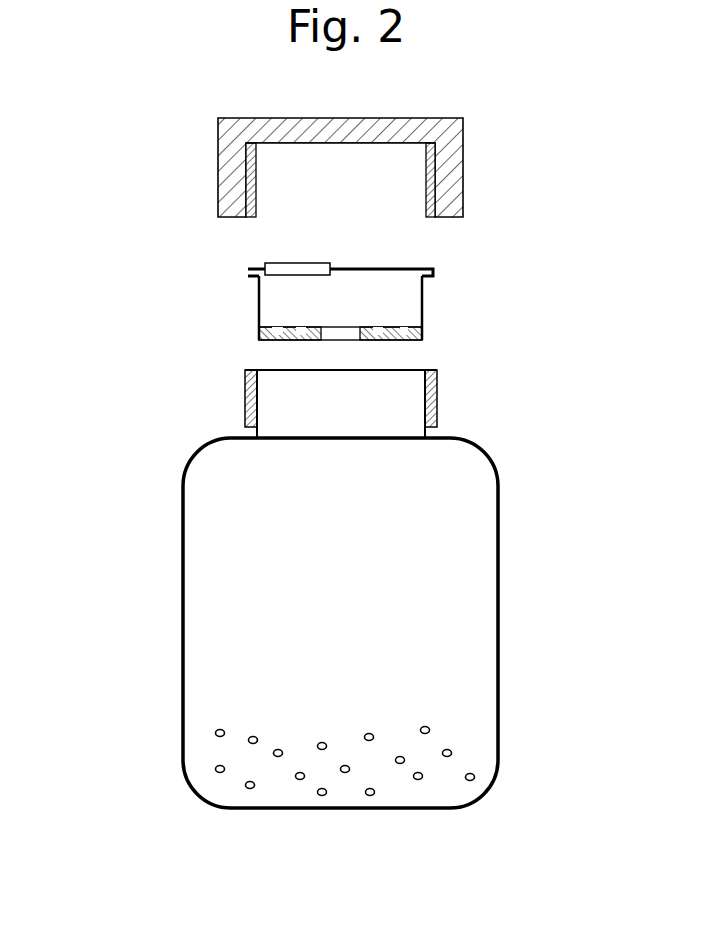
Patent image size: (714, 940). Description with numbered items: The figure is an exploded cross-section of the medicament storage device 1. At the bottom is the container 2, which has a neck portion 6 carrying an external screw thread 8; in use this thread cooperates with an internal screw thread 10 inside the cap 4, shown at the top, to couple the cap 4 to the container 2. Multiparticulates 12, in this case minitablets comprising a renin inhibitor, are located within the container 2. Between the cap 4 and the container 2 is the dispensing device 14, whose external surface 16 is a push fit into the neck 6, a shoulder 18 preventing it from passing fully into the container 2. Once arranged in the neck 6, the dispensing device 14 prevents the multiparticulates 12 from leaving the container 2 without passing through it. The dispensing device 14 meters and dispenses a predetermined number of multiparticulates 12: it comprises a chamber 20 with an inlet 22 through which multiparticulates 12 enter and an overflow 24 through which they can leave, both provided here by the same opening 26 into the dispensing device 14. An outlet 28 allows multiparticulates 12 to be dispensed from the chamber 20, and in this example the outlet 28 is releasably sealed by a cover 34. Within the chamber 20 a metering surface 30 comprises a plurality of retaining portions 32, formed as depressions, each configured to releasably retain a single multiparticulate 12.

The medicament storage device 1 is at (84, 244).
The container 2 is at (343, 589).
The cap 4 is at (378, 143).
The neck portion 6 is at (315, 414).
The external screw thread 8 is at (437, 396).
The internal screw thread 10 is at (385, 167).
The multiparticulates 12 is at (215, 769).
The dispensing device 14 is at (360, 225).
The external surface 16 is at (258, 305).
The shoulder 18 is at (259, 285).
The chamber 20 is at (290, 307).
The inlet 22 is at (327, 336).
The overflow 24 is at (378, 328).
The opening 26 is at (366, 304).
The outlet 28 is at (283, 263).
The metering surface 30 is at (349, 327).
The retaining portions 32 is at (414, 328).
The cover 34 is at (298, 262).